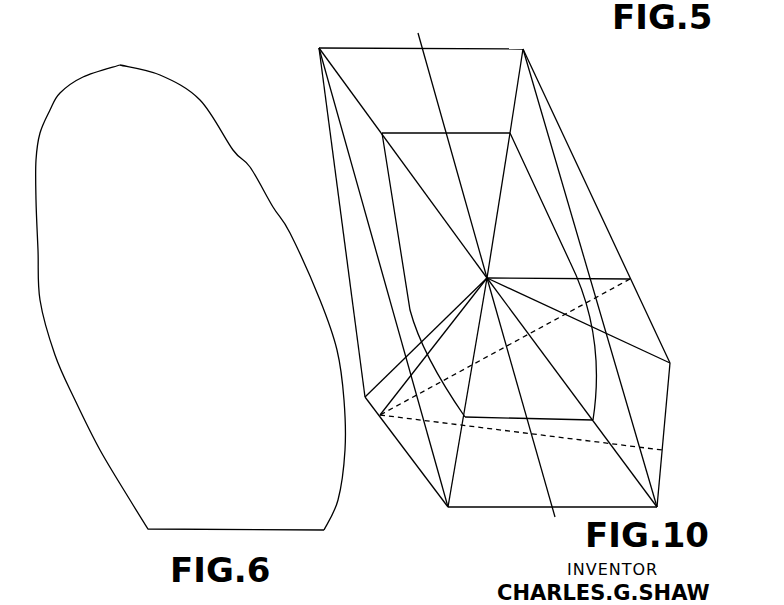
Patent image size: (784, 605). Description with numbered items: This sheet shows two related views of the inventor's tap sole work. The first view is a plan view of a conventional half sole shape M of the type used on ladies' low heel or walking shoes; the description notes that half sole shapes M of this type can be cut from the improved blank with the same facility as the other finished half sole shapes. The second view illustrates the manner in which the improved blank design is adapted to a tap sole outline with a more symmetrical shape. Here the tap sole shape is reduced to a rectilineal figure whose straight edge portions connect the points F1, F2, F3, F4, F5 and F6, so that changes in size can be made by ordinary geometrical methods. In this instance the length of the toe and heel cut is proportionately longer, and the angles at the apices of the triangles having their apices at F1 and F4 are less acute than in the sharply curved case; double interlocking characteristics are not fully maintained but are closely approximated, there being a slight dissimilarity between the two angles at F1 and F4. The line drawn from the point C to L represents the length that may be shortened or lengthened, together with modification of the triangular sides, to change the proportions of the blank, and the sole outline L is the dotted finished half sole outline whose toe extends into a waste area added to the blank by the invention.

In FIG. 6, the half sole shape M is at (250, 163).
In FIG. 10, the point F1 is at (365, 400).
In FIG. 10, the point F2 is at (319, 48).
In FIG. 10, the point F3 is at (523, 49).
In FIG. 10, the point F4 is at (670, 363).
In FIG. 10, the point F5 is at (657, 507).
In FIG. 10, the point F6 is at (448, 507).
In FIG. 10, the point C is at (448, 144).
In FIG. 10, the sole outline L is at (528, 408).